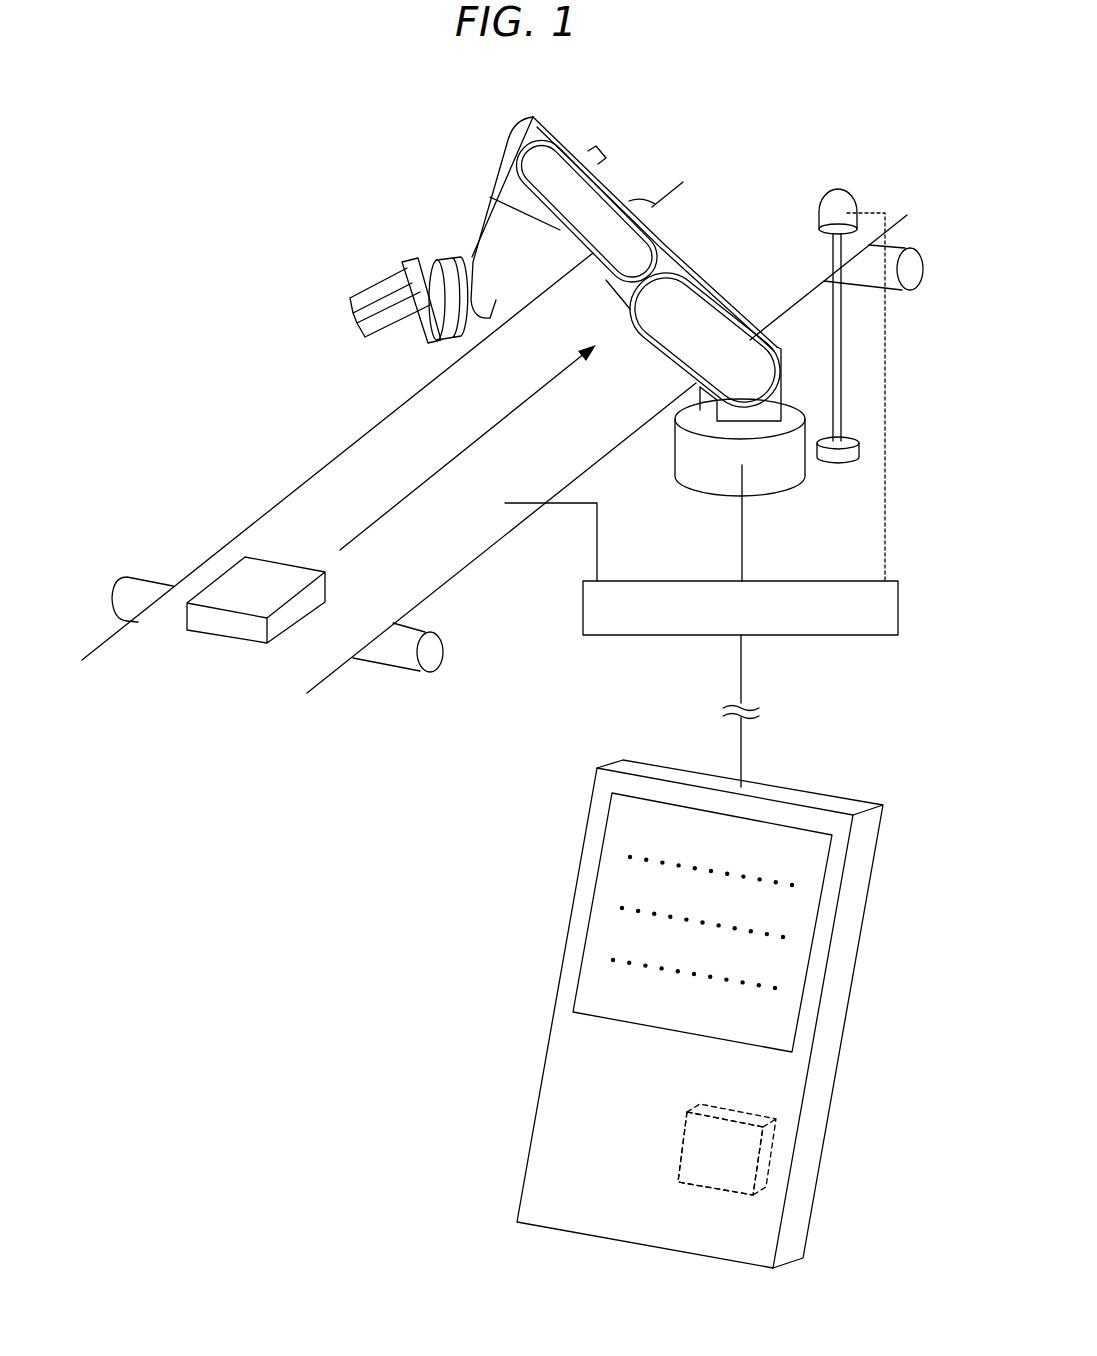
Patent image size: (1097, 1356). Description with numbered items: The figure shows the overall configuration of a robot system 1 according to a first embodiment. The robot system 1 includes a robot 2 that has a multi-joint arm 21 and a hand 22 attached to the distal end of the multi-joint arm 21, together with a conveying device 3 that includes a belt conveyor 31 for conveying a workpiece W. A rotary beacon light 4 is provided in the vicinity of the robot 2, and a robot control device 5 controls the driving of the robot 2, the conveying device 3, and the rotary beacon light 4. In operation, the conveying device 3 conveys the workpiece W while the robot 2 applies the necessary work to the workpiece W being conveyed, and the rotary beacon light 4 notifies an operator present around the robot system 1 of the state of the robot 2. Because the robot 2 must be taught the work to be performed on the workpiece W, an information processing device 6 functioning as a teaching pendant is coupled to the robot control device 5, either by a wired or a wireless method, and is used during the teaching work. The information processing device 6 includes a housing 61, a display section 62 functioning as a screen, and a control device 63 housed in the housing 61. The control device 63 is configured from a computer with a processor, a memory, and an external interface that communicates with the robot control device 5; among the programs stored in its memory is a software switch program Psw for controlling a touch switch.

The robot system 1 is at (262, 93).
The robot 2 is at (563, 113).
The multi-joint arm 21 is at (612, 210).
The hand 22 is at (385, 298).
The conveying device 3 is at (298, 478).
The belt conveyor 31 is at (288, 514).
The workpiece W is at (222, 628).
The rotary beacon light 4 is at (841, 178).
The robot control device 5 is at (900, 609).
The information processing device 6 is at (598, 760).
The housing 61 is at (595, 1080).
The display section 62 is at (795, 910).
The control device 63 is at (740, 1162).
The software switch program Psw is at (718, 1159).